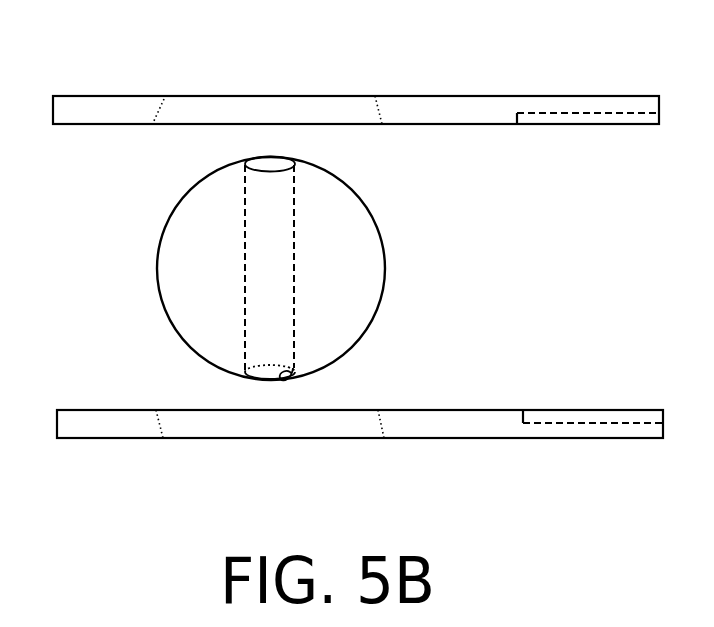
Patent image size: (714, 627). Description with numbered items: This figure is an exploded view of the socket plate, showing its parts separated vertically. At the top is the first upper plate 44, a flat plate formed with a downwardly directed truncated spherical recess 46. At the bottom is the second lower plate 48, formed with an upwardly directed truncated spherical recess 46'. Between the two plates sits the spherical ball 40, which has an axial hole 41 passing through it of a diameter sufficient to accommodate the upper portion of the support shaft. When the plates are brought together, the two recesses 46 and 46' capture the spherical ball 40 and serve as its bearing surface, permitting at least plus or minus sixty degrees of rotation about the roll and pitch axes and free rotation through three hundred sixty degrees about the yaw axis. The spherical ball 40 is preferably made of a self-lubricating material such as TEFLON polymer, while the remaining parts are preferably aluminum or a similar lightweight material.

The spherical ball 40 is at (362, 203).
The axial hole 41 is at (284, 380).
The first upper plate 44 is at (474, 96).
The truncated spherical recess 46 is at (205, 75).
The second lower plate 48 is at (480, 410).
The truncated spherical recess 46' is at (226, 453).